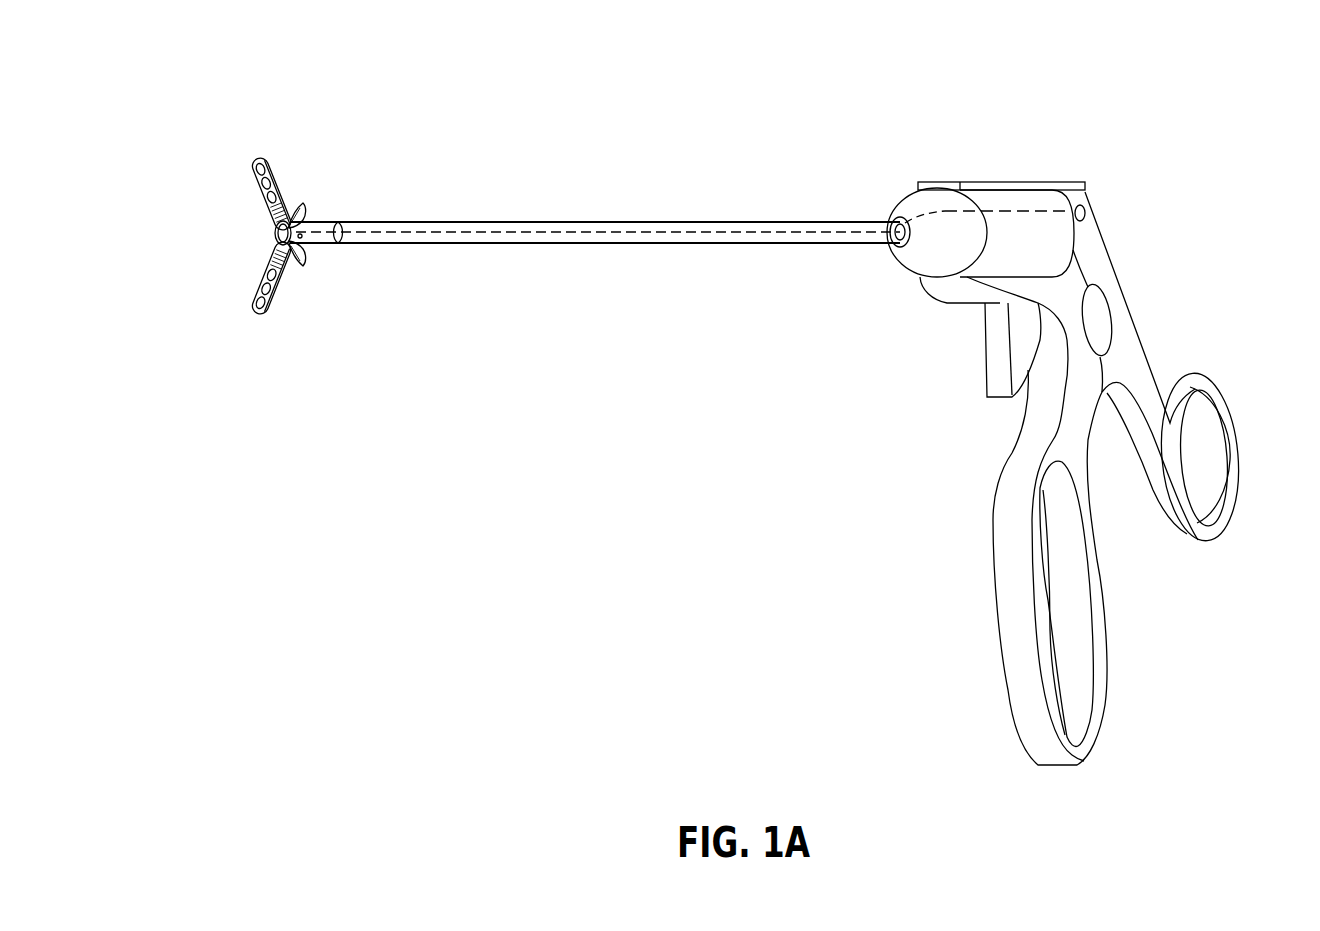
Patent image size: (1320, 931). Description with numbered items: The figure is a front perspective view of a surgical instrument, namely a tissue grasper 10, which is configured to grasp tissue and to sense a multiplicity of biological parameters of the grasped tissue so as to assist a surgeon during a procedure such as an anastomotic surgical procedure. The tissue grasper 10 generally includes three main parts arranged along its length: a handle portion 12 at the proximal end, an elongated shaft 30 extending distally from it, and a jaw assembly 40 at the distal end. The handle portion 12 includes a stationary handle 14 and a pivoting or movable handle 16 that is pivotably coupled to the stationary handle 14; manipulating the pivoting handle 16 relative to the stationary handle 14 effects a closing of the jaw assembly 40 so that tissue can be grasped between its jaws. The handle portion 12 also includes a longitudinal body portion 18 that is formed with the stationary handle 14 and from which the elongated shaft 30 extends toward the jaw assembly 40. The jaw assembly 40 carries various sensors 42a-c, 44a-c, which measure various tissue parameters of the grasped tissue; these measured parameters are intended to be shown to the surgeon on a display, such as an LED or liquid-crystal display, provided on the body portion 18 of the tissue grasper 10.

The tissue grasper 10 is at (728, 128).
The handle portion 12 is at (1096, 169).
The stationary handle 14 is at (1005, 565).
The pivoting handle 16 is at (1228, 392).
The longitudinal body portion 18 is at (913, 194).
The elongated shaft 30 is at (600, 250).
The jaw assembly 40 is at (305, 168).
The sensors 42a-c is at (258, 167).
The sensors 44a-c is at (258, 306).